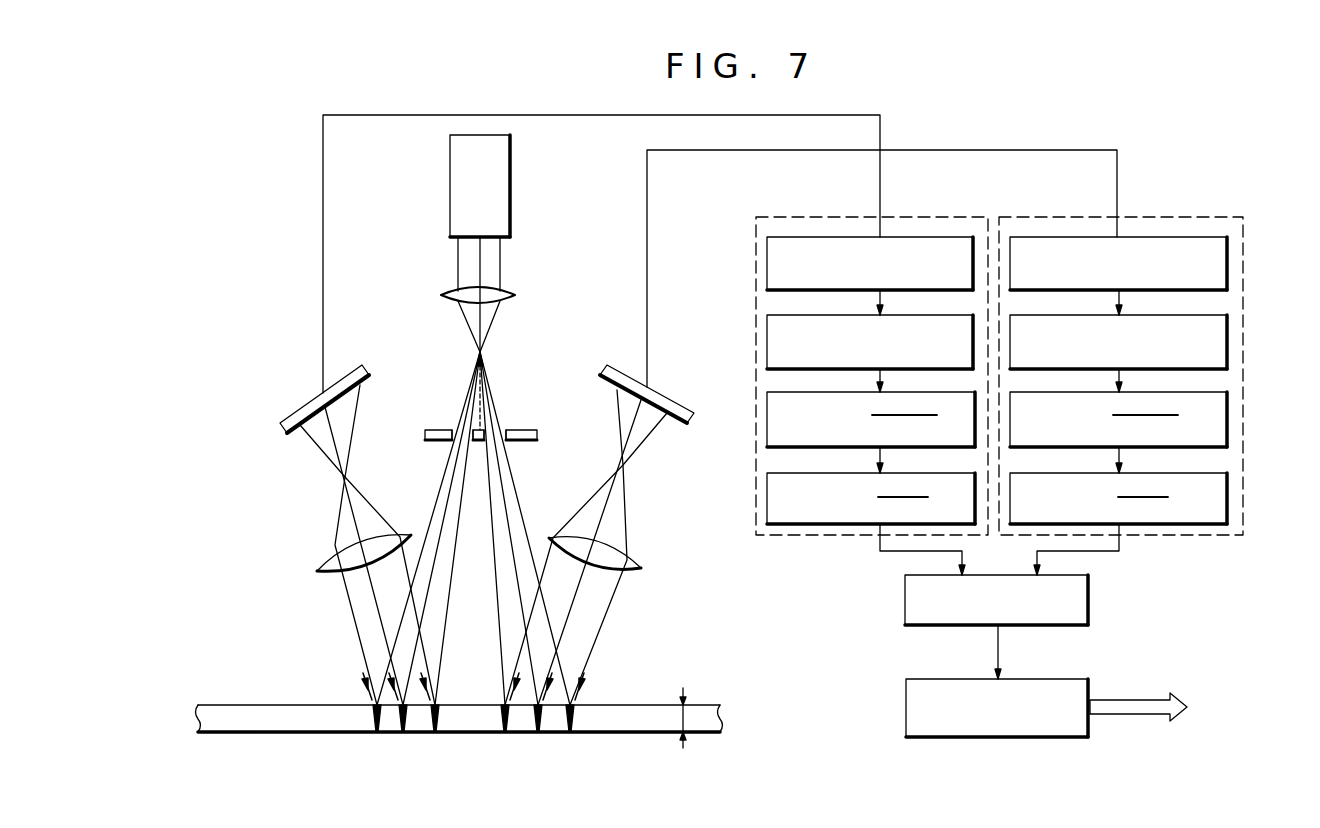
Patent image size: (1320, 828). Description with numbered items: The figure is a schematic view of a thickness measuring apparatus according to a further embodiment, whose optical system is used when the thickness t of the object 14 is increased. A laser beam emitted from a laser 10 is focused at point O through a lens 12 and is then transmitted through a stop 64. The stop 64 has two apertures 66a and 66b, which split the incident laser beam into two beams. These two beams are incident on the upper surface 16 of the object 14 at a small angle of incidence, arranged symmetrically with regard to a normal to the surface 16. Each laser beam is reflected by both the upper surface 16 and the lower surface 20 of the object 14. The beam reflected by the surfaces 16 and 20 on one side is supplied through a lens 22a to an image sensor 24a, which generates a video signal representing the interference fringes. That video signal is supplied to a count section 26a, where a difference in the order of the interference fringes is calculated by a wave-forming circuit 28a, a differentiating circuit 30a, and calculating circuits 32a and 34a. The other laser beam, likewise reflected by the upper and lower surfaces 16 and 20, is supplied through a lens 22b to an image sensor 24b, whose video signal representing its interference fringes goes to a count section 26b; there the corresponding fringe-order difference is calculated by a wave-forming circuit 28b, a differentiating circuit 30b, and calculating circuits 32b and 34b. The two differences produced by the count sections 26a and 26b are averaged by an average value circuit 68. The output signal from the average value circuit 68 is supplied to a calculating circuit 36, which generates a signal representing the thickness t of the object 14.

The laser 10 is at (510, 207).
The lens 12 is at (515, 293).
The focal point O is at (483, 351).
The stop 64 is at (440, 430).
The aperture 66a is at (447, 446).
The aperture 66b is at (520, 447).
The image sensor 24a is at (306, 395).
The image sensor 24b is at (672, 400).
The lens 22a is at (318, 565).
The lens 22b is at (663, 528).
The object 14 is at (313, 725).
The upper surface 16 is at (632, 705).
The lower surface 20 is at (648, 732).
The thickness t is at (694, 706).
The count section 26a is at (922, 215).
The count section 26b is at (1172, 215).
The wave-forming circuit 28a is at (765, 255).
The wave-forming circuit 28b is at (1227, 265).
The differentiating circuit 30a is at (765, 340).
The differentiating circuit 30b is at (1227, 340).
The calculating circuit 32a is at (767, 410).
The calculating circuit 32b is at (1227, 420).
The calculating circuit 34a is at (787, 527).
The calculating circuit 34b is at (1237, 517).
The average value circuit 68 is at (1090, 598).
The calculating circuit 36 is at (1080, 678).